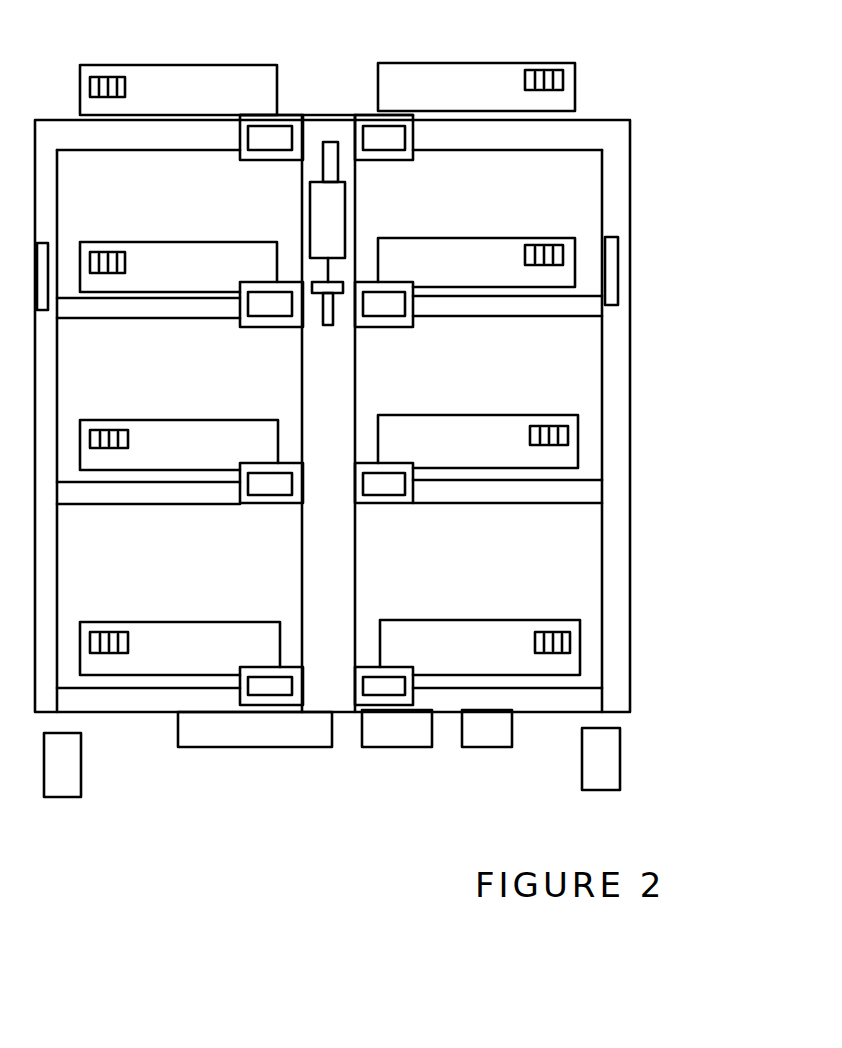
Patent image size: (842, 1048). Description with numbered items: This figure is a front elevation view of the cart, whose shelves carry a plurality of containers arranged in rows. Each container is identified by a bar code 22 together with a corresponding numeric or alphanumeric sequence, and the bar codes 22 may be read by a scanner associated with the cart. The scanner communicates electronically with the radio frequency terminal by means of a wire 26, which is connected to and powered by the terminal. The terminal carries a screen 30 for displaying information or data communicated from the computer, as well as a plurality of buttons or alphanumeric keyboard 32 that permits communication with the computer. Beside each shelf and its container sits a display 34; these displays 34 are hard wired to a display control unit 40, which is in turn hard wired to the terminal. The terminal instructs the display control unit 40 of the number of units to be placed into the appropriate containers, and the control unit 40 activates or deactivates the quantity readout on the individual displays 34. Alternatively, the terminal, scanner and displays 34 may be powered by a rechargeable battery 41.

The bar code 22 is at (567, 65).
The wire 26 is at (330, 273).
The screen 30 is at (310, 184).
The alphanumeric keyboard 32 is at (310, 230).
The display 34 is at (395, 326).
The display control unit 40 is at (217, 747).
The rechargeable battery 41 is at (392, 747).